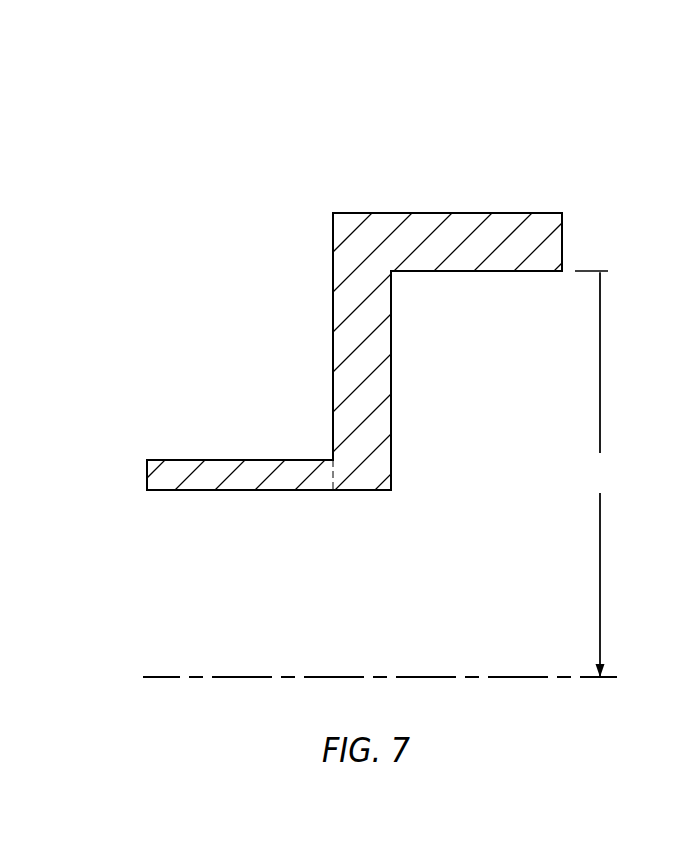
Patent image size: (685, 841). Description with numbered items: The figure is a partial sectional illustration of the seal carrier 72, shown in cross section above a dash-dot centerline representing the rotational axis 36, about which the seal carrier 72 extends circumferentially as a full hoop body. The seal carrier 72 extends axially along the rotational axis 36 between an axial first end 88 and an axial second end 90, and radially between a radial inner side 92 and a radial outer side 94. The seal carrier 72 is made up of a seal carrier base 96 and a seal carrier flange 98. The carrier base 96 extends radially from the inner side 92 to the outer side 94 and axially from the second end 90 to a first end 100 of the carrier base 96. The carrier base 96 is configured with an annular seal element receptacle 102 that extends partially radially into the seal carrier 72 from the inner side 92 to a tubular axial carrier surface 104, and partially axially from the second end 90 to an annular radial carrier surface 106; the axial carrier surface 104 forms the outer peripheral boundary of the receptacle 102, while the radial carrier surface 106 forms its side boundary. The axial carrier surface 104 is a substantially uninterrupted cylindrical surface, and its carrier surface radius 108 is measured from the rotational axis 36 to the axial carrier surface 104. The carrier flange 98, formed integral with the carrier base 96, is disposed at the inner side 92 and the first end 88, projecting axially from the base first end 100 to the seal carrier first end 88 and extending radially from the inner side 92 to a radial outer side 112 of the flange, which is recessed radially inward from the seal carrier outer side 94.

The seal carrier 72 is at (312, 155).
The axial first end 88 is at (145, 477).
The axial second end 90 is at (570, 233).
The radial inner side 92 is at (362, 492).
The radial outer side 94 is at (435, 211).
The seal carrier base 96 is at (297, 350).
The seal carrier flange 98 is at (220, 492).
The first end of the carrier base 100 is at (330, 262).
The annular seal element receptacle 102 is at (452, 402).
The axial carrier surface 104 is at (498, 272).
The radial carrier surface 106 is at (393, 350).
The carrier surface radius 108 is at (597, 474).
The radial outer side of the carrier flange 112 is at (190, 457).
The rotational axis 36 is at (157, 677).